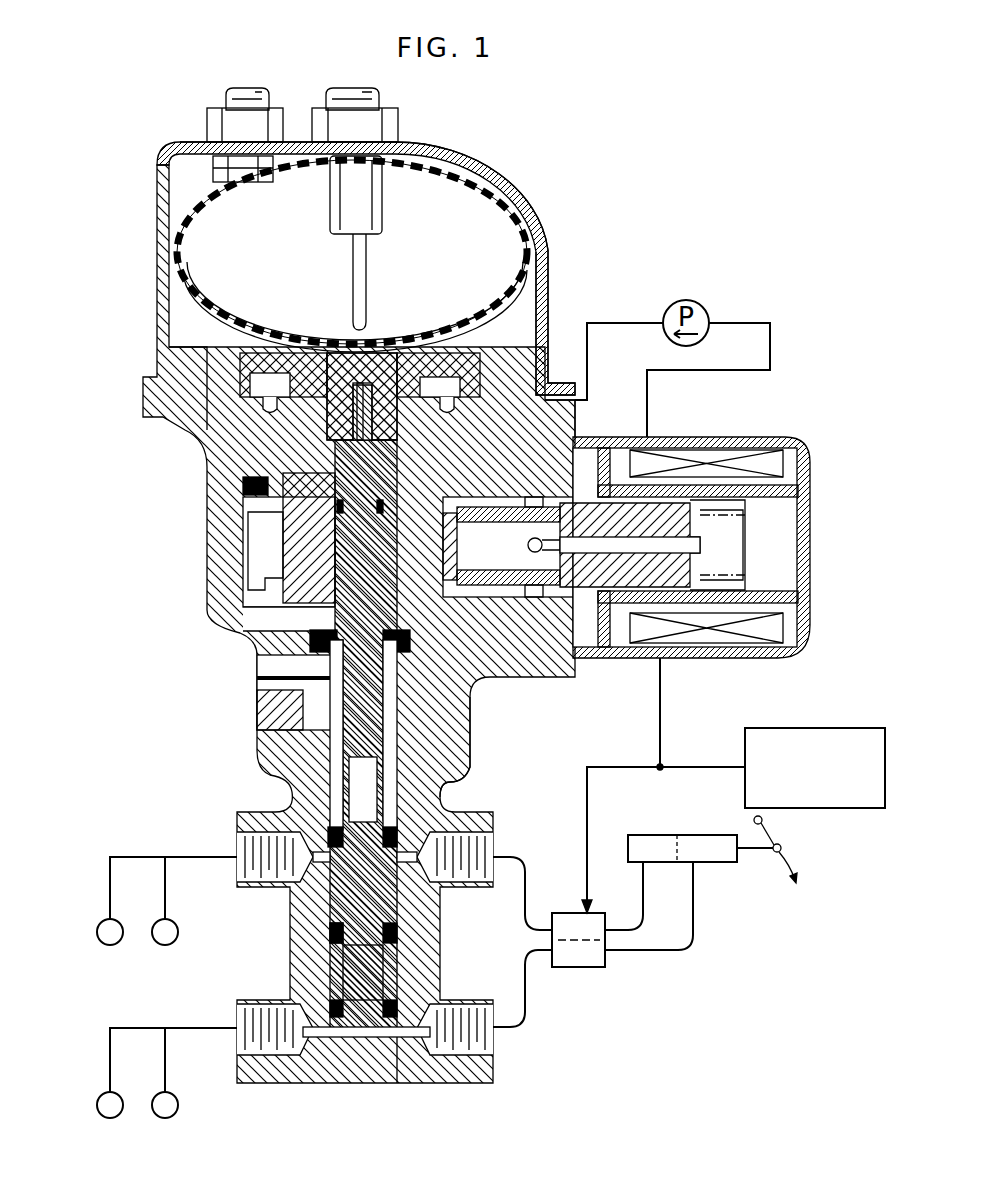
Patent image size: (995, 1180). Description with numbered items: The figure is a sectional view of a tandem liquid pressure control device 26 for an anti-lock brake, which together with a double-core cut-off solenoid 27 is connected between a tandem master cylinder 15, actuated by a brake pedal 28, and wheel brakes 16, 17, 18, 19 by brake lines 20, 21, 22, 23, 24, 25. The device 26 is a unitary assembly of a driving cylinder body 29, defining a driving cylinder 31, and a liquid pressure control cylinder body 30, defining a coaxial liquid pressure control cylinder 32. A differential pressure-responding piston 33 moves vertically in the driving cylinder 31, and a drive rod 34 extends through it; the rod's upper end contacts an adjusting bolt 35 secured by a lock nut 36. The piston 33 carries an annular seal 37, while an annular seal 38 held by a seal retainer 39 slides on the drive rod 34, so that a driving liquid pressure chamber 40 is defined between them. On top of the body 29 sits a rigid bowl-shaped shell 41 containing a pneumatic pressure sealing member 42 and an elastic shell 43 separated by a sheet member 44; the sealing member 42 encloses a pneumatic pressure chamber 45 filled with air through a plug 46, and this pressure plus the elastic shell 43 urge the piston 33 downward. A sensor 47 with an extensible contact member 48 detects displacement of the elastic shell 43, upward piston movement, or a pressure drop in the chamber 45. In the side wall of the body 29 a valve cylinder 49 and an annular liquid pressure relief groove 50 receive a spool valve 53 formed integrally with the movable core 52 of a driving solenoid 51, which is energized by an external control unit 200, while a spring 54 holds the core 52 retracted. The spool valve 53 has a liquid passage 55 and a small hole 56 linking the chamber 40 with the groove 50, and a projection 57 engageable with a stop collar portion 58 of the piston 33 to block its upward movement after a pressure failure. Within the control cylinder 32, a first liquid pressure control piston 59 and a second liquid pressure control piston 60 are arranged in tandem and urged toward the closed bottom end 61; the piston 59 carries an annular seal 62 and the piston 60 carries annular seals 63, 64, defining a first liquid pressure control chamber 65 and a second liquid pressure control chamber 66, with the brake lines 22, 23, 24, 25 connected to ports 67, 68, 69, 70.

The tandem master cylinder 15 is at (653, 830).
The wheel brake 16 is at (115, 944).
The wheel brake 17 is at (170, 944).
The wheel brake 18 is at (98, 1105).
The wheel brake 19 is at (178, 1105).
The brake line 20 is at (645, 885).
The brake line 21 is at (676, 953).
The brake line 22 is at (527, 880).
The brake line 23 is at (527, 1003).
The brake line 24 is at (143, 857).
The brake line 25 is at (152, 1028).
The tandem liquid pressure control device 26 is at (148, 328).
The double-core cut-off solenoid 27 is at (585, 975).
The brake pedal 28 is at (785, 880).
The driving cylinder body 29 is at (250, 388).
The liquid pressure control cylinder body 30 is at (287, 767).
The driving cylinder 31 is at (285, 553).
The liquid pressure control cylinder 32 is at (300, 705).
The differential pressure-responding piston 33 is at (243, 483).
The drive rod 34 is at (315, 640).
The adjusting bolt 35 is at (257, 458).
The lock nut 36 is at (210, 423).
The annular seal 37 is at (250, 530).
The annular seal 38 is at (300, 690).
The seal retainer 39 is at (330, 715).
The driving liquid pressure chamber 40 is at (350, 565).
The rigid bowl-shaped shell 41 is at (520, 186).
The pneumatic pressure sealing member 42 is at (525, 226).
The elastic shell 43 is at (551, 272).
The sheet member 44 is at (530, 312).
The pneumatic pressure chamber 45 is at (428, 228).
The plug 46 is at (225, 100).
The sensor 47 is at (385, 100).
The extensible contact member 48 is at (370, 272).
The valve cylinder 49 is at (540, 498).
The annular liquid pressure relief groove 50 is at (577, 440).
The driving solenoid 51 is at (735, 440).
The movable core 52 is at (668, 465).
The spool valve 53 is at (572, 410).
The spring 54 is at (687, 617).
The liquid passage 55 is at (508, 546).
The small hole 56 is at (580, 597).
The projection 57 is at (527, 595).
The stop collar portion 58 is at (483, 592).
The first liquid pressure control piston 59 is at (447, 775).
The second liquid pressure control piston 60 is at (338, 967).
The closed bottom end 61 is at (347, 1040).
The annular seal 62 is at (410, 838).
The annular seal 63 is at (400, 935).
The annular seal 64 is at (400, 1000).
The first liquid pressure control chamber 65 is at (328, 933).
The second liquid pressure control chamber 66 is at (398, 1050).
The port 67 is at (497, 843).
The port 68 is at (495, 1042).
The port 69 is at (233, 843).
The port 70 is at (243, 1045).
The external control unit 200 is at (836, 812).